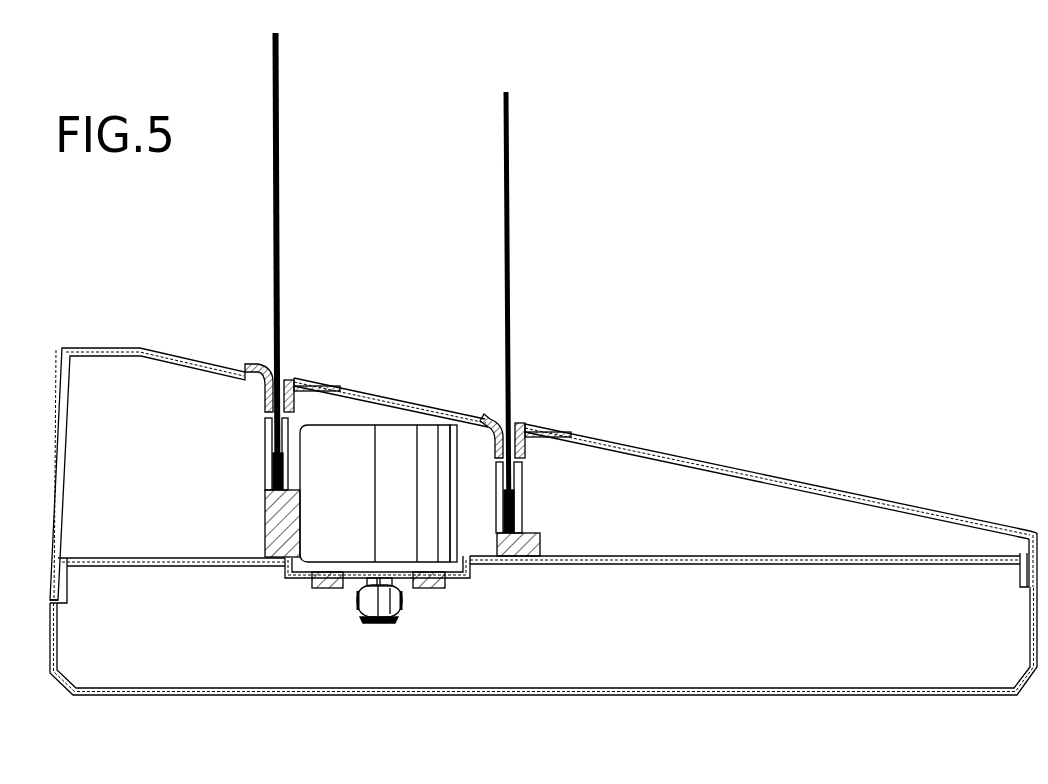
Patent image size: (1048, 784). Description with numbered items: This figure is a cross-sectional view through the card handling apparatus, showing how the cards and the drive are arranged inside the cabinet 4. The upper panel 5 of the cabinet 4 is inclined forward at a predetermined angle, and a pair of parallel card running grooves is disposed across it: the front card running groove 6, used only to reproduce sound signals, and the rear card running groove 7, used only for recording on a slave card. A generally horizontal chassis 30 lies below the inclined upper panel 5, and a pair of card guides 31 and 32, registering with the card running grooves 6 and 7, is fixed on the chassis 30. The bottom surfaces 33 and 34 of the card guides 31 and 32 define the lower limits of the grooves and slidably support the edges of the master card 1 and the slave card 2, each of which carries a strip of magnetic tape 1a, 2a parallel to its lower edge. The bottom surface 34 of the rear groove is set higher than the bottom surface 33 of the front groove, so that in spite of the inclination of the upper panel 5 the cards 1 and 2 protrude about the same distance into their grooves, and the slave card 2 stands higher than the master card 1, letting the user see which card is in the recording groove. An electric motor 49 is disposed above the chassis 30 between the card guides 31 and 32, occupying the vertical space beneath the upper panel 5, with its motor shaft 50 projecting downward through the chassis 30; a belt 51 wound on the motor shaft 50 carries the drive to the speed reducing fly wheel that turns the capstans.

The master card 1 is at (509, 175).
The slave card 2 is at (279, 178).
The magnetic tape 1a is at (517, 505).
The magnetic tape 2a is at (283, 468).
The cabinet 4 is at (917, 503).
The upper panel 5 is at (760, 477).
The front card running groove 6 is at (514, 423).
The rear card running groove 7 is at (281, 376).
The chassis 30 is at (763, 562).
The card guide 31 is at (507, 495).
The card guide 32 is at (272, 450).
The bottom surface 33 is at (498, 527).
The bottom surface 34 is at (270, 482).
The electric motor 49 is at (385, 437).
The motor shaft 50 is at (387, 623).
The belt 51 is at (402, 603).